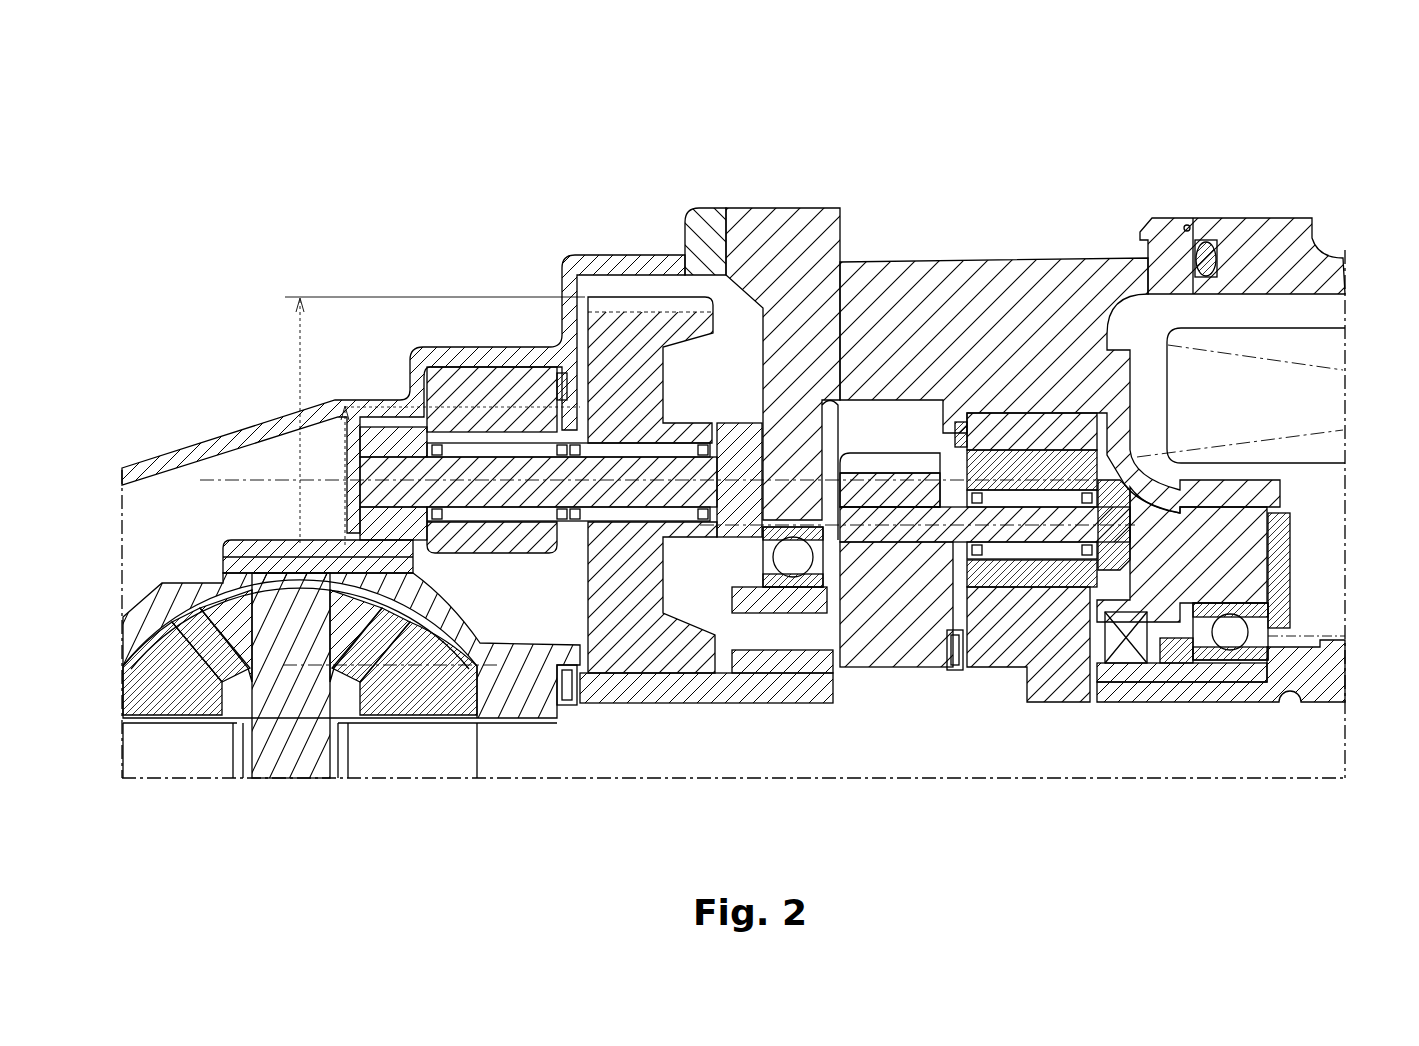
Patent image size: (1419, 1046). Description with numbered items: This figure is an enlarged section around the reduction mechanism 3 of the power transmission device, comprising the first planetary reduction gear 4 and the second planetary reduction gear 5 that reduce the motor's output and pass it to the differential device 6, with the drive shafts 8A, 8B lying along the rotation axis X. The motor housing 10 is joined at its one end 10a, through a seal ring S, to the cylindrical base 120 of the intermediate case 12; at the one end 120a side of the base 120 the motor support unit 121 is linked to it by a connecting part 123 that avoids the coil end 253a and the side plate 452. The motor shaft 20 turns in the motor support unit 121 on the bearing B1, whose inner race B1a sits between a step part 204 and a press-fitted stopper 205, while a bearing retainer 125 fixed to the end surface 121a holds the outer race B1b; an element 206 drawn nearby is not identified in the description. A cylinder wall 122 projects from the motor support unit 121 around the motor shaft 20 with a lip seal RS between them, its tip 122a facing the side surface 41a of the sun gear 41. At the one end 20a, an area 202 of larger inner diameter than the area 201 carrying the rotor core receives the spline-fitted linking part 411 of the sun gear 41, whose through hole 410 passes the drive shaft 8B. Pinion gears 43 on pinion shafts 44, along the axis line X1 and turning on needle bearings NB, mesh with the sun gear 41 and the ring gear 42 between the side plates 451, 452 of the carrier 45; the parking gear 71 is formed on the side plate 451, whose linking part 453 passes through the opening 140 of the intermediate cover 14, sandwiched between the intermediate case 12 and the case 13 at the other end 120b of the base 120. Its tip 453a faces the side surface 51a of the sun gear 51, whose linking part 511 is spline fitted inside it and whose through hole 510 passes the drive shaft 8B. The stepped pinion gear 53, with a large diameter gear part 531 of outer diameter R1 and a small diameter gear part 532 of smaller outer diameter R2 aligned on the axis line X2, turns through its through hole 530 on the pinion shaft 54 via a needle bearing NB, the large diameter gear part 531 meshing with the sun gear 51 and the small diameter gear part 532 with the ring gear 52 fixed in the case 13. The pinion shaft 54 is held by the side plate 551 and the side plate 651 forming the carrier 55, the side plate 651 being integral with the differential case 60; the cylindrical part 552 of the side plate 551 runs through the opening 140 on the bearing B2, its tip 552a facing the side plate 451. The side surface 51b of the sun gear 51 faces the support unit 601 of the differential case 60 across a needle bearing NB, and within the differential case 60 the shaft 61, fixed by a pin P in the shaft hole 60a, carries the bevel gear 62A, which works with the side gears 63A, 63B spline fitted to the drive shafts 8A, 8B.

The reduction mechanism 3 is at (925, 128).
The first planetary reduction gear 4 is at (945, 262).
The second planetary reduction gear 5 is at (714, 455).
The differential device 6 is at (192, 515).
The drive shaft 8A is at (173, 768).
The drive shaft 8B is at (442, 760).
The motor housing 10 is at (1300, 215).
The one end 10a is at (1206, 218).
The intermediate case 12 is at (1091, 309).
The case 13 is at (690, 210).
The intermediate cover 14 is at (740, 210).
The motor shaft 20 is at (1348, 697).
The one end 20a is at (1060, 702).
The sun gear 41 is at (985, 702).
The side surface 41a is at (1005, 667).
The ring gear 42 is at (1050, 397).
The pinion gear 43 is at (967, 400).
The pinion shaft 44 is at (1026, 451).
The carrier 45 is at (800, 447).
The sun gear 51 is at (660, 704).
The side surface 51a is at (680, 705).
The side surface 51b is at (590, 705).
The ring gear 52 is at (490, 385).
The stepped pinion gear 53 is at (680, 412).
The pinion shaft 54 is at (652, 597).
The carrier 55 is at (784, 350).
The differential case 60 is at (163, 580).
The shaft hole 60a is at (262, 540).
The shaft 61 is at (287, 760).
The bevel gear 62A is at (240, 657).
The side gear 63A is at (178, 708).
The side gear 63B is at (390, 703).
The parking gear 71 is at (890, 455).
The base 120 is at (1042, 290).
The one end 120a is at (1186, 224).
The other end 120b is at (860, 255).
The motor support unit 121 is at (1240, 450).
The end surface 121a is at (1302, 450).
The cylinder wall 122 is at (1112, 590).
The tip 122a is at (1032, 589).
The connecting part 123 is at (1178, 440).
The bearing retainer 125 is at (1292, 495).
The opening 140 is at (830, 480).
The area 201 is at (1330, 702).
The area 202 is at (1205, 702).
The step part 204 is at (1292, 640).
The stopper 205 is at (1185, 665).
The base step 206 is at (1320, 652).
The coil end 253a is at (1127, 305).
The through hole 410 is at (1020, 700).
The linking part 411 is at (1240, 702).
The side plate 451 is at (810, 420).
The side plate 452 is at (1108, 420).
The linking part 453 is at (768, 700).
The tip 453a is at (790, 674).
The through hole 510 is at (640, 665).
The linking part 511 is at (837, 704).
The through hole 530 is at (628, 450).
The large diameter gear part 531 is at (560, 560).
The small diameter gear part 532 is at (482, 560).
The side plate 551 is at (745, 420).
The cylindrical part 552 is at (750, 597).
The tip 552a is at (830, 614).
The support unit 601 is at (505, 715).
The side plate 651 is at (432, 470).
The bearing B1 is at (1240, 603).
The inner race B1a is at (1208, 625).
The outer race B1b is at (1290, 592).
The bearing B2 is at (745, 558).
The needle bearing NB is at (955, 712).
The pin P is at (223, 562).
The lip seal RS is at (1120, 665).
The seal ring S is at (1218, 262).
The rotation axis X is at (105, 779).
The axis line X1 is at (1150, 526).
The axis line X2 is at (215, 476).
The outer diameter R1 is at (277, 459).
The outer diameter R2 is at (325, 459).